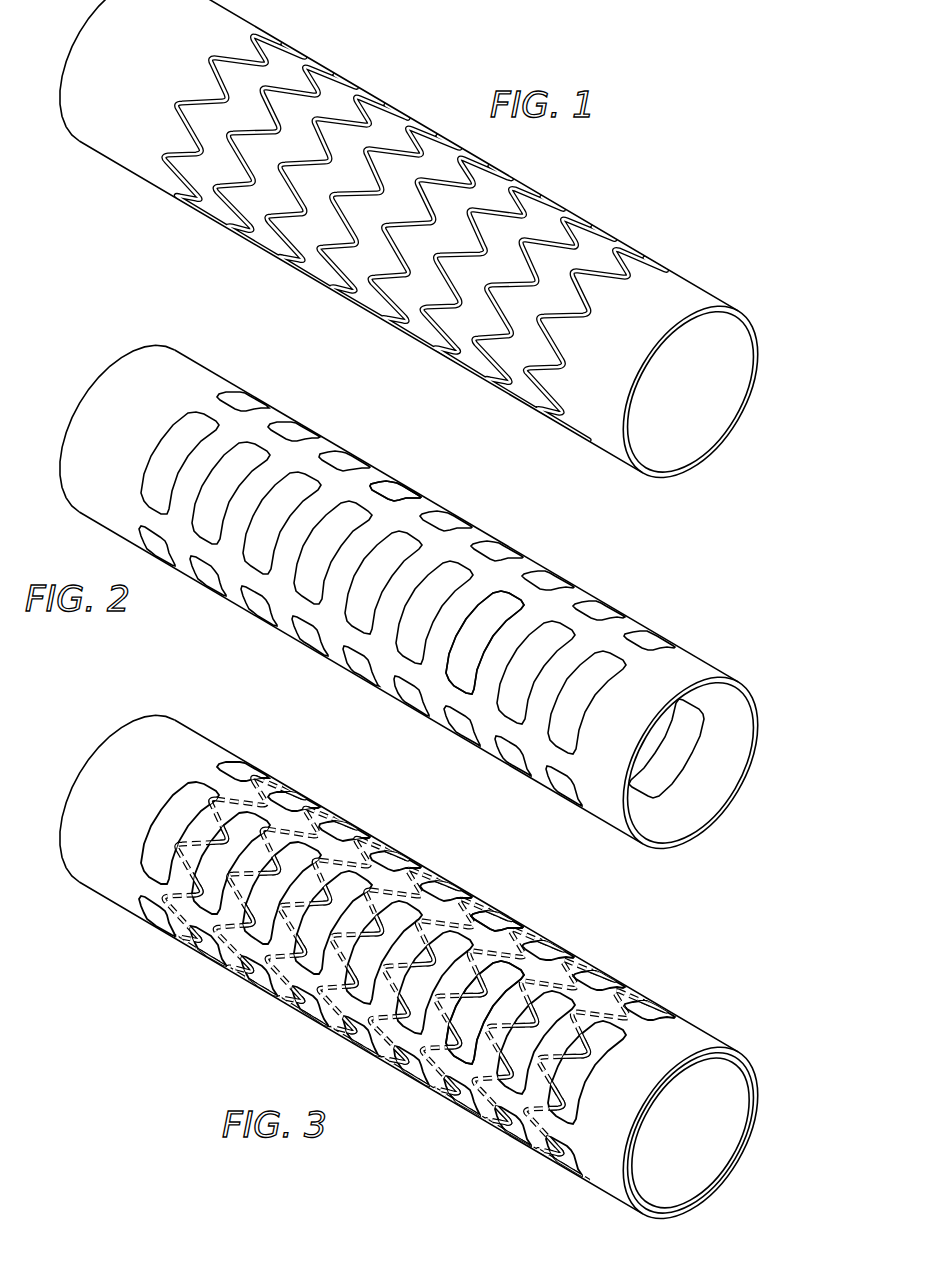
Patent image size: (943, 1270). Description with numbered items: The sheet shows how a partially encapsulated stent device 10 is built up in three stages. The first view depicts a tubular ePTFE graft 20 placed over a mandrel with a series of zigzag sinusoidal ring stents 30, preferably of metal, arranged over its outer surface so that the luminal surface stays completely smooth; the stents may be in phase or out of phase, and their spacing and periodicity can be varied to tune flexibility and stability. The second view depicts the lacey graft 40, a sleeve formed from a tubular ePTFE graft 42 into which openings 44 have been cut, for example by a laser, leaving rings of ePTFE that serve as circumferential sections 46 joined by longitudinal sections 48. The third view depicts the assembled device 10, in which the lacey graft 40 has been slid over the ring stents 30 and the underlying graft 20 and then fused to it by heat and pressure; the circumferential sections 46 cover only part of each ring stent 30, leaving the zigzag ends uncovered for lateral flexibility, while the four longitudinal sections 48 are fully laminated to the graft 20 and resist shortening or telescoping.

In FIG. 3, the device 10 is at (700, 970).
In FIG. 1, the tubular ePTFE graft 20 is at (143, 123).
In FIG. 3, the tubular ePTFE graft 20 is at (742, 1107).
In FIG. 1, the zigzag sinusoidal ring stents 30 is at (523, 207).
In FIG. 3, the zigzag sinusoidal ring stents 30 is at (547, 1017).
In FIG. 2, the lacey graft 40 is at (718, 617).
In FIG. 2, the tubular ePTFE graft 42 is at (215, 377).
In FIG. 3, the tubular ePTFE graft 42 is at (730, 1052).
In FIG. 2, the openings 44 is at (495, 607).
In FIG. 3, the openings 44 is at (548, 1013).
In FIG. 2, the circumferential sections 46 is at (415, 572).
In FIG. 3, the circumferential sections 46 is at (303, 858).
In FIG. 2, the longitudinal sections 48 is at (378, 492).
In FIG. 3, the longitudinal sections 48 is at (477, 932).